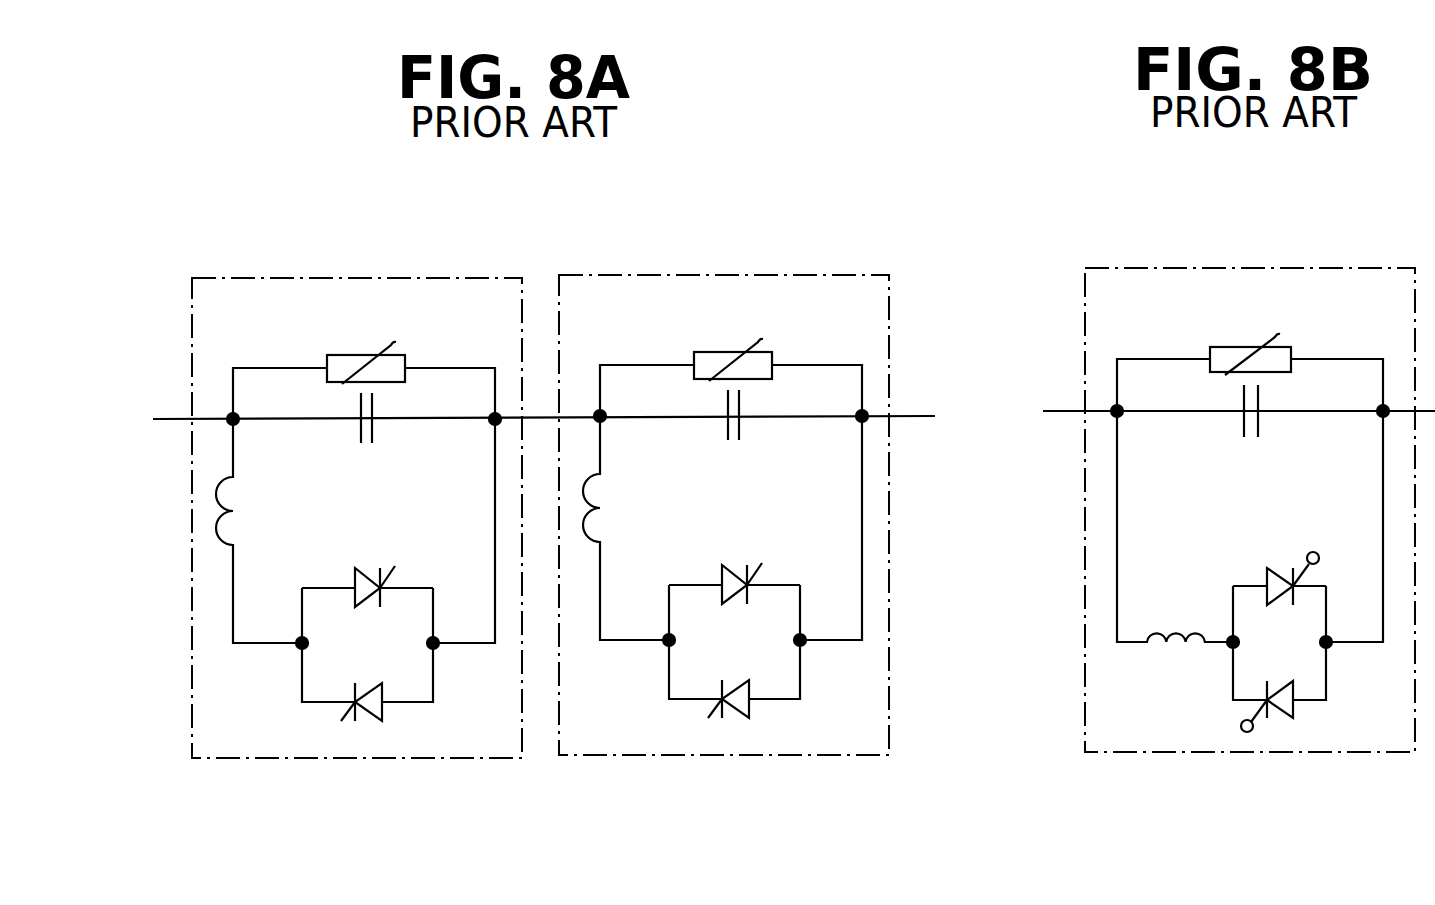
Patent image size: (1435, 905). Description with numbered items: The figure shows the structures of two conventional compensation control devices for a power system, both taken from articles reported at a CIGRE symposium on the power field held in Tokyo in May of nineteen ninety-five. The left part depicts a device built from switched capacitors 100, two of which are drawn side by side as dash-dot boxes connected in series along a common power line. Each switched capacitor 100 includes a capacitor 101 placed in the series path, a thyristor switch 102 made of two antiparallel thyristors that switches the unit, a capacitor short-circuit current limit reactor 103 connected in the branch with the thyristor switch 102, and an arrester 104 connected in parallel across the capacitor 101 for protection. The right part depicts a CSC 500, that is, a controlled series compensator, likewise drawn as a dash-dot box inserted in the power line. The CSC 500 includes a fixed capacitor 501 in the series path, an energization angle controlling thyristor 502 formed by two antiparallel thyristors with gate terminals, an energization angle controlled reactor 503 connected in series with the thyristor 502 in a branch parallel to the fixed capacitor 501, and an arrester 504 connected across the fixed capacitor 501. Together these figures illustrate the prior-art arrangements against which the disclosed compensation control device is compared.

In FIG. 8A, the switched capacitor 100 is at (327, 278).
In FIG. 8A, the capacitor 101 is at (374, 435).
In FIG. 8A, the thyristor switch 102 is at (371, 598).
In FIG. 8A, the capacitor short-circuit current limit reactor 103 is at (240, 505).
In FIG. 8A, the arrester 104 is at (385, 382).
In FIG. 8B, the CSC 500 is at (1217, 268).
In FIG. 8B, the fixed capacitor 501 is at (1260, 428).
In FIG. 8B, the energization angle controlling thyristor 502 is at (1282, 596).
In FIG. 8B, the energization angle controlled reactor 503 is at (1178, 633).
In FIG. 8B, the arrester 504 is at (1272, 372).